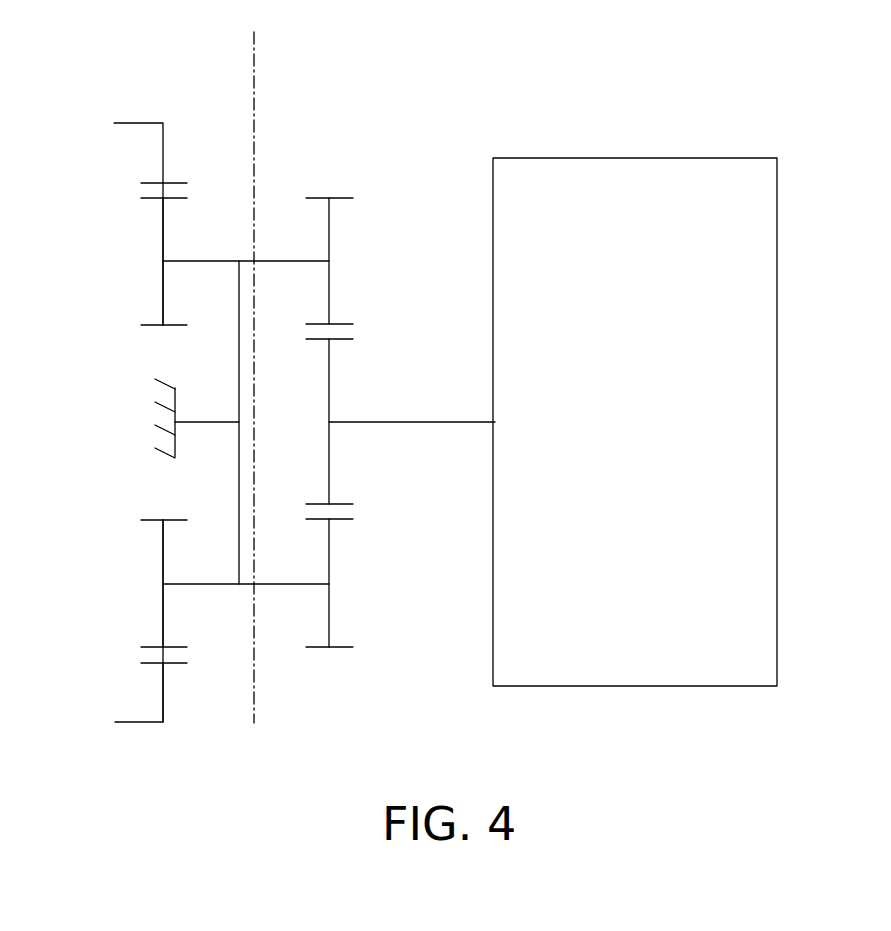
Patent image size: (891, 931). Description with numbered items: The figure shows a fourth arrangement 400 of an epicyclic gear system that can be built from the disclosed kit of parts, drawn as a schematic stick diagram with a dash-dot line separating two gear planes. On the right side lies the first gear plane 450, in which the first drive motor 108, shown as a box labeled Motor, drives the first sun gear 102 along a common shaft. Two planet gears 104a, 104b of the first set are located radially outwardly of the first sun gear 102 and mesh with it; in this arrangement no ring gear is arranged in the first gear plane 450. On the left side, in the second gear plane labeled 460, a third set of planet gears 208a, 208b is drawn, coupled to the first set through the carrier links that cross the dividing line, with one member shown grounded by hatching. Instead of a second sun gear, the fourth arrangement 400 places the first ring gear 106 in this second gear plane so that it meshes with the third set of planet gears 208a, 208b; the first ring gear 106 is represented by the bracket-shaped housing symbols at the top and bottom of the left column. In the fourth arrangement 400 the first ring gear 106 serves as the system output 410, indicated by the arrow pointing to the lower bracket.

The fourth arrangement 400 is at (787, 123).
The system output 410 is at (122, 731).
The first gear plane 450 is at (329, 45).
The second side region 460 is at (181, 45).
The first sun gear 102 is at (329, 386).
The planet gear 104a is at (329, 229).
The planet gear 104b is at (329, 558).
The first ring gear 106 is at (172, 182).
The first drive motor 108 is at (777, 422).
The planet gear of the third set 208a is at (163, 228).
The planet gear of the third set 208b is at (163, 557).